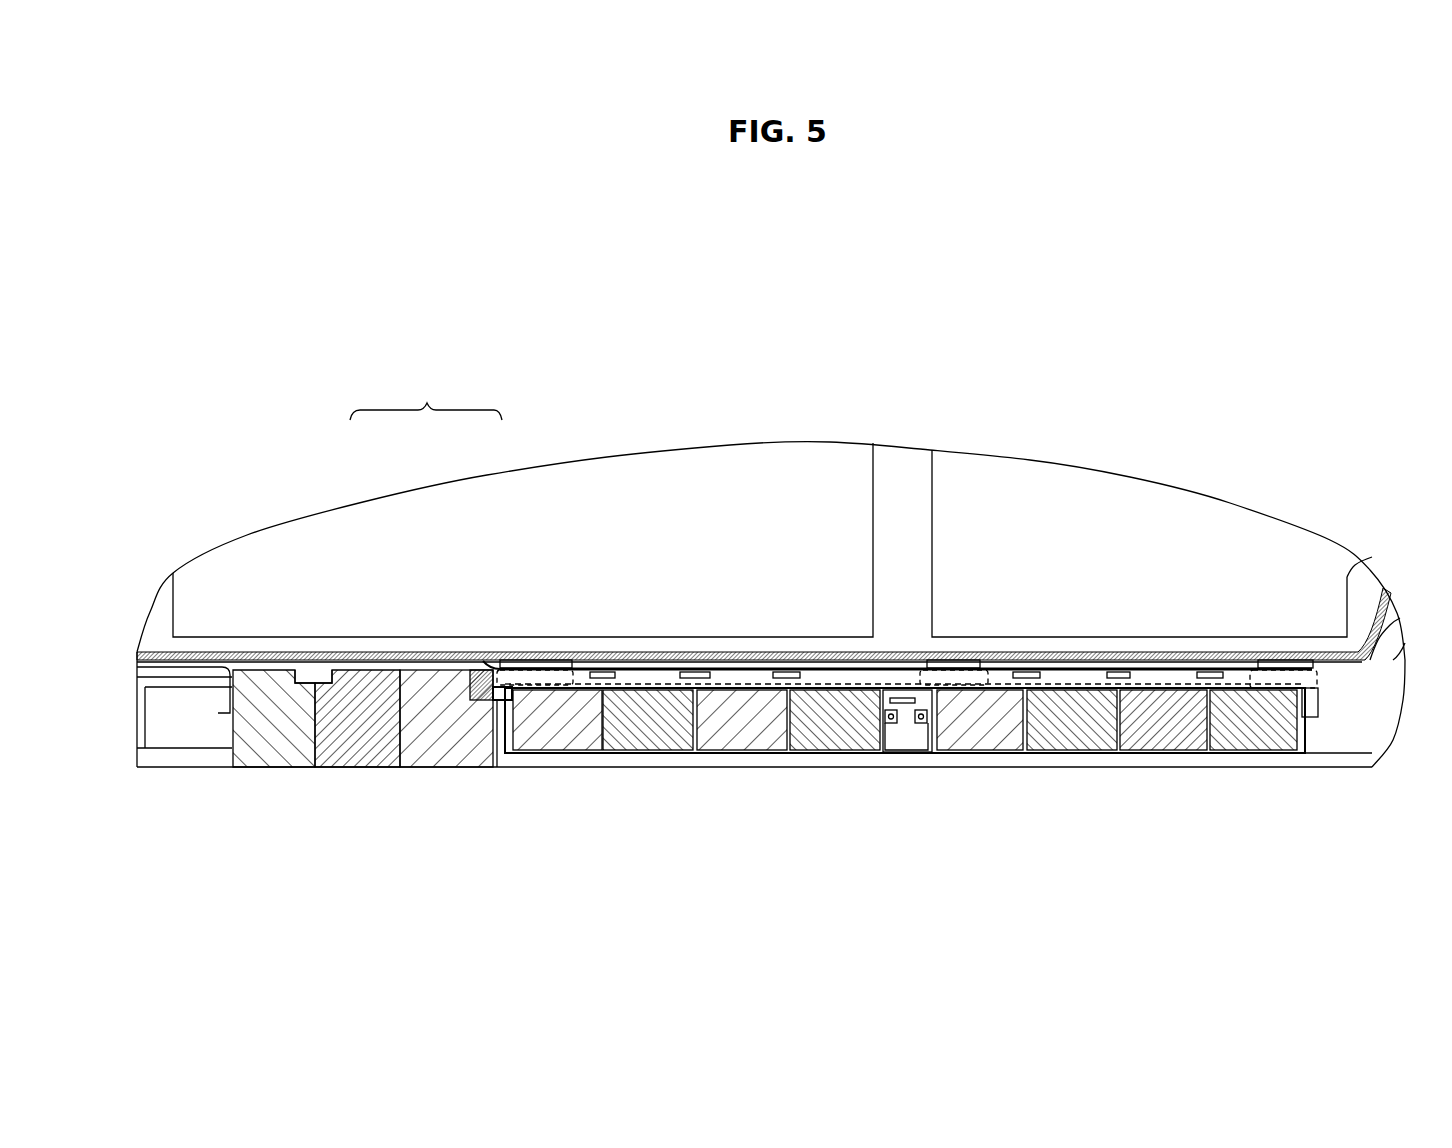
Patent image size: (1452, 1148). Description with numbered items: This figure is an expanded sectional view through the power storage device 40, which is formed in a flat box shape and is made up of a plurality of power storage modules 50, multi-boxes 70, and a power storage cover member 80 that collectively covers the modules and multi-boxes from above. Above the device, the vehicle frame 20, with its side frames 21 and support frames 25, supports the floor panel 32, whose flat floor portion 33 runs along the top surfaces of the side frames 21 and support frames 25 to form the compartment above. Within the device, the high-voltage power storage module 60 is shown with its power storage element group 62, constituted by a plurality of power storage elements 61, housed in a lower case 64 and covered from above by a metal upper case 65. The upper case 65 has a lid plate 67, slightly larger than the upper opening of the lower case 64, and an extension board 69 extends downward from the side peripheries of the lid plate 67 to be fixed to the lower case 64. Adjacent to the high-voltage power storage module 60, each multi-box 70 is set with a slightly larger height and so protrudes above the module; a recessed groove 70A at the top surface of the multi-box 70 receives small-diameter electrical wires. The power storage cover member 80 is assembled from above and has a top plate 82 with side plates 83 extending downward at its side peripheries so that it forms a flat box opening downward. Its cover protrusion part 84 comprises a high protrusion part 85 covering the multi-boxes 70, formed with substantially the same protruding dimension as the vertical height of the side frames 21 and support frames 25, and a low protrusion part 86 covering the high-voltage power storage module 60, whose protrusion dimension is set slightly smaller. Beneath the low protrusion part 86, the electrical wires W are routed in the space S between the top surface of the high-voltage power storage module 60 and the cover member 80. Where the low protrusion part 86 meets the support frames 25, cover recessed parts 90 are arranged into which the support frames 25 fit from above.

The vehicle frame 20 is at (766, 654).
The side frame 21 is at (157, 690).
The support frame 25 is at (488, 668).
The floor panel 32 is at (760, 527).
The floor portion 33 is at (625, 660).
The power storage device 40 is at (905, 655).
The power storage module 50 is at (754, 816).
The high-voltage power storage module 60 is at (1000, 781).
The power storage element 61 is at (825, 728).
The power storage element group 62 is at (1286, 779).
The lower case 64 is at (553, 753).
The upper case 65 is at (1306, 697).
The lid plate 67 is at (1095, 688).
The extension board 69 is at (500, 700).
The multi-box 70 is at (359, 629).
The recessed groove 70A is at (264, 670).
The power storage cover member 80 is at (673, 664).
The top plate 82 is at (882, 660).
The side plate 83 is at (232, 678).
The cover protrusion part 84 is at (426, 394).
The high protrusion part 85 is at (295, 668).
The low protrusion part 86 is at (590, 668).
The cover recessed part 90 is at (933, 687).
The electrical wire W is at (637, 677).
The space S is at (655, 678).